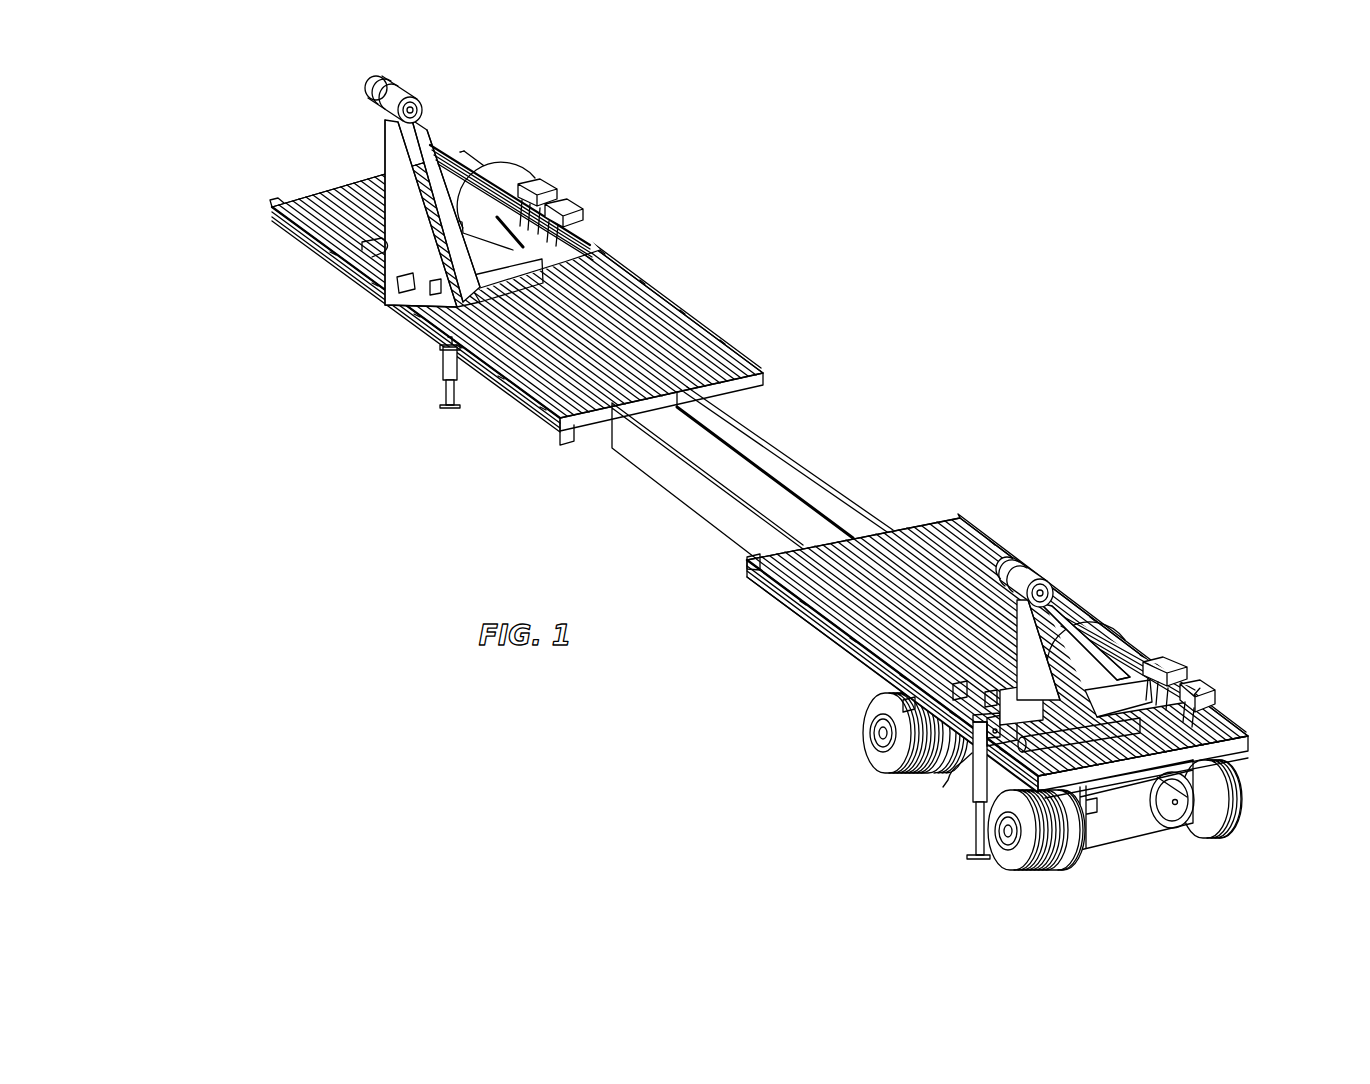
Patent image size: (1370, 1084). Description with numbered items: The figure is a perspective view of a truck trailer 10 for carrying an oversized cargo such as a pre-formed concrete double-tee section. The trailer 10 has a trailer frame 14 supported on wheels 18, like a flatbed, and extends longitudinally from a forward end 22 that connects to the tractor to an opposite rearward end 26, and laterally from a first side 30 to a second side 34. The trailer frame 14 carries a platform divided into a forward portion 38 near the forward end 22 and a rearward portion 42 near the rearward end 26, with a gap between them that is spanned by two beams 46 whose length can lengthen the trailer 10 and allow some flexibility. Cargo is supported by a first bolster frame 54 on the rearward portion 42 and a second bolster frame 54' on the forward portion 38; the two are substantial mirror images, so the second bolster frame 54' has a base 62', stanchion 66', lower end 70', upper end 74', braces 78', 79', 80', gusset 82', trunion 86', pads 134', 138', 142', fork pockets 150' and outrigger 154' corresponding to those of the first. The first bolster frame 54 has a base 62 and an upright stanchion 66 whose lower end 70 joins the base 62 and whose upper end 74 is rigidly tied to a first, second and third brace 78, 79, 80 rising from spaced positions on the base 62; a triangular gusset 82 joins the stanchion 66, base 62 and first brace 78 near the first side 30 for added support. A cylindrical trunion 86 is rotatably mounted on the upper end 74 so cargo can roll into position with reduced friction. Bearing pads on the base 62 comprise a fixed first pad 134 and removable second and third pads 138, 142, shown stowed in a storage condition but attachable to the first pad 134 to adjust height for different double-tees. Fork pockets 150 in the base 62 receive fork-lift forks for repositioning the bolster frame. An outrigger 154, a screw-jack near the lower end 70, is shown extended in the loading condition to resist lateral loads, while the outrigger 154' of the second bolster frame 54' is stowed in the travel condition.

The truck trailer 10 is at (934, 354).
The trailer frame 14 is at (770, 605).
The wheels 18 is at (1090, 858).
The forward end 22 is at (307, 183).
The rearward end 26 is at (1232, 756).
The first side 30 is at (837, 637).
The second side 34 is at (1000, 545).
The forward portion 38 is at (672, 323).
The rearward portion 42 is at (757, 575).
The beams 46 is at (780, 442).
The first bolster frame 54 is at (1100, 603).
The base 62 is at (1150, 646).
The stanchion 66 is at (848, 729).
The lower end 70 is at (917, 750).
The upper end 74 is at (1073, 618).
The first brace 78 is at (1028, 609).
The second brace 79 is at (1116, 602).
The third brace 80 is at (1124, 650).
The gusset 82 is at (913, 688).
The trunion 86 is at (1048, 561).
The first pad 134 is at (1165, 732).
The second pad 138 is at (1216, 658).
The third pad 142 is at (1254, 702).
The fork pockets 150 is at (908, 794).
The outrigger 154 is at (924, 801).
The second bolster frame 54' is at (467, 122).
The base 62' is at (653, 289).
The stanchion 66' is at (400, 319).
The lower end 70' is at (355, 297).
The upper end 74' is at (399, 203).
The first brace 78' is at (384, 322).
The second brace 79' is at (511, 195).
The third brace 80' is at (510, 193).
The gusset 82' is at (357, 312).
The trunion 86' is at (408, 87).
The first pad 134' is at (643, 232).
The second pad 138' is at (592, 167).
The third pad 142' is at (624, 209).
The fork pockets 150' is at (420, 381).
The outrigger 154' is at (318, 270).